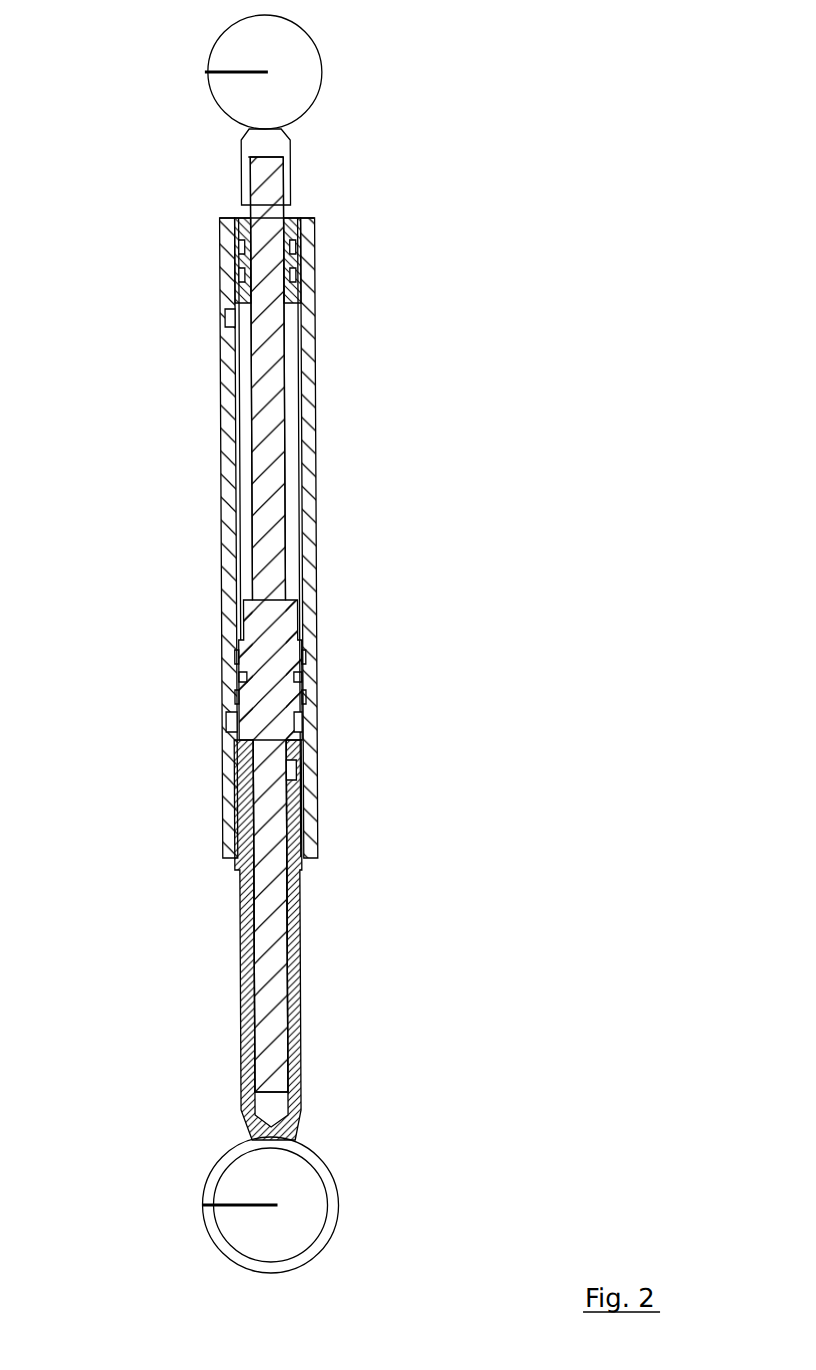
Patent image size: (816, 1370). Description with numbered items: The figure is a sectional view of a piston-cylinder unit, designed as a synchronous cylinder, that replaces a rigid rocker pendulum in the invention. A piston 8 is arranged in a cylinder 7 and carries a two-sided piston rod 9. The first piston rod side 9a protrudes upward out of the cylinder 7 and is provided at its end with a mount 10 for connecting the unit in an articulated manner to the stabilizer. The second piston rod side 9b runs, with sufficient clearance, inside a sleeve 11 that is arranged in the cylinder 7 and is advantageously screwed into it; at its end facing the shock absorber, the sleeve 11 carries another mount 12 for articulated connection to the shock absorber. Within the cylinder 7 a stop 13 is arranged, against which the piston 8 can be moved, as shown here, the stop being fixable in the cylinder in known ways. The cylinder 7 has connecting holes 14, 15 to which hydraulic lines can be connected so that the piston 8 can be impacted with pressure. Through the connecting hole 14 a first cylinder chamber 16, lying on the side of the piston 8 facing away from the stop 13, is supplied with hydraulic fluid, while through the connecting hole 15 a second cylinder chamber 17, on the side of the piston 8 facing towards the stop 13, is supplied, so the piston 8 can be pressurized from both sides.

The cylinder 7 is at (306, 459).
The piston 8 is at (275, 655).
The two-sided piston rod 9 is at (287, 531).
The first piston rod side 9a is at (268, 385).
The second piston rod side 9b is at (268, 878).
The mount 10 is at (313, 69).
The sleeve 11 is at (292, 983).
The mount 12 is at (305, 1205).
The stop 13 is at (290, 774).
The connecting hole 14 is at (230, 318).
The connecting hole 15 is at (228, 721).
The first cylinder chamber 16 is at (294, 355).
The second cylinder chamber 17 is at (297, 725).